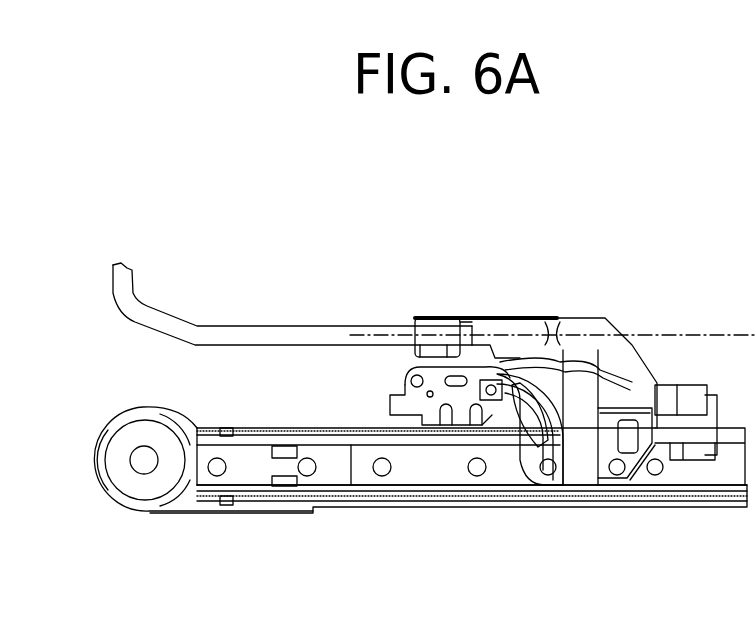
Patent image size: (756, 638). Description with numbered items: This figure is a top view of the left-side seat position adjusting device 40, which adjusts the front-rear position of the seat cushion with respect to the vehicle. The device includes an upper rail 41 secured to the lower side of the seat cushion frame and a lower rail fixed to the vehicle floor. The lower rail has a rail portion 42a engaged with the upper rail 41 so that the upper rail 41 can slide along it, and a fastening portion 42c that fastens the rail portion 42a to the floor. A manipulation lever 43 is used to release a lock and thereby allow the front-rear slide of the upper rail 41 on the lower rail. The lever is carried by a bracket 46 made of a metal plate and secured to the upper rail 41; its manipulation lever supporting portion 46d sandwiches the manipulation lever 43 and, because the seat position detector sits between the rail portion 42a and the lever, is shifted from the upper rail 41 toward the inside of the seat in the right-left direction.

The seat position adjusting device 40 is at (455, 203).
The upper rail 41 is at (507, 478).
The rail portion 42a is at (378, 509).
The fastening portion 42c is at (187, 512).
The manipulation lever 43 is at (297, 325).
The bracket 46 is at (585, 450).
The manipulation lever supporting portion 46d is at (530, 319).